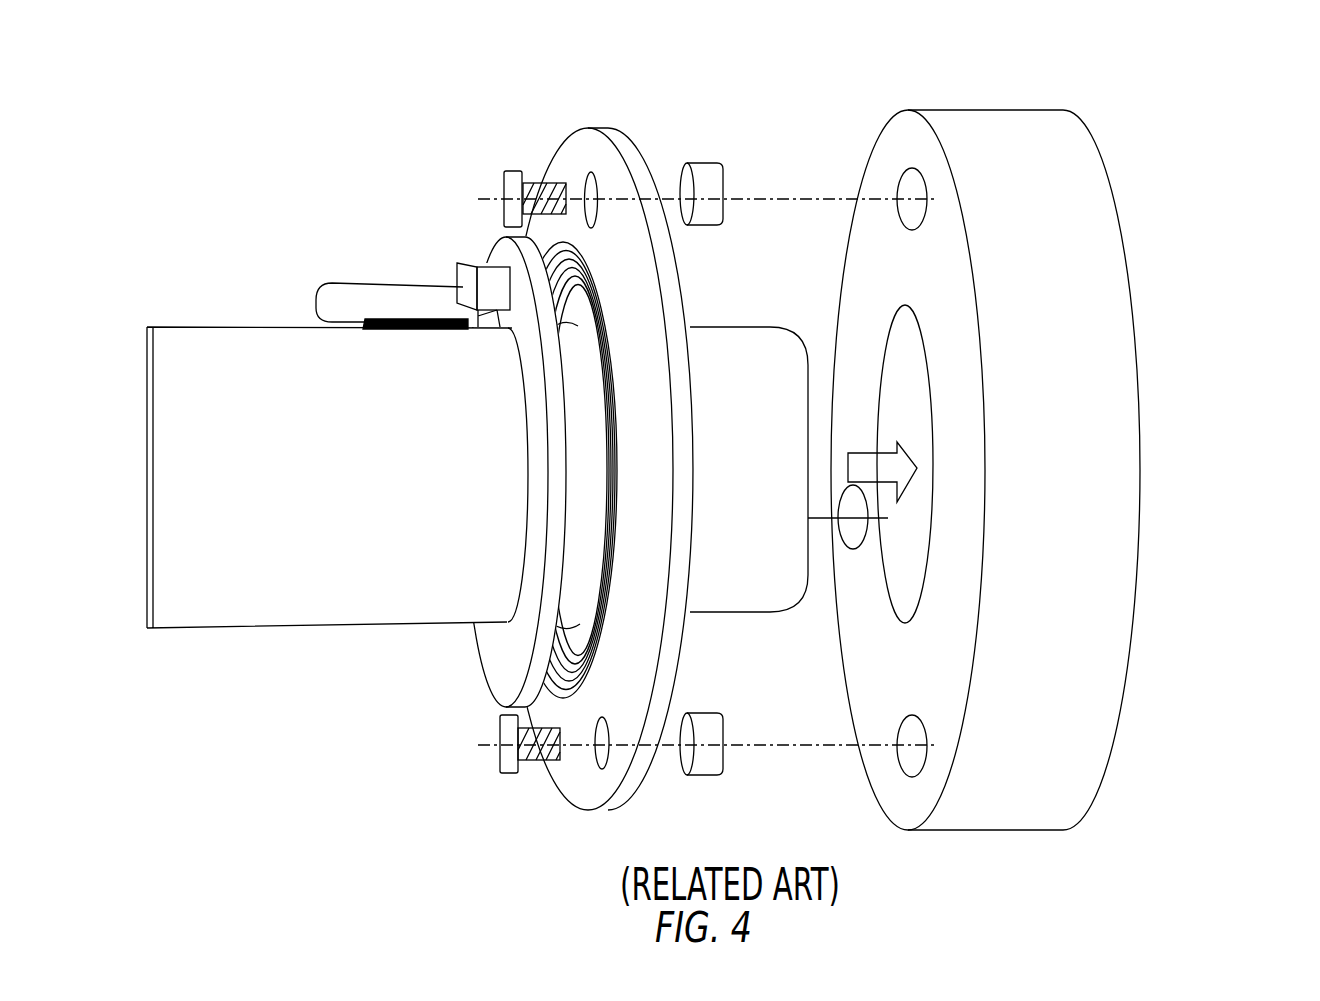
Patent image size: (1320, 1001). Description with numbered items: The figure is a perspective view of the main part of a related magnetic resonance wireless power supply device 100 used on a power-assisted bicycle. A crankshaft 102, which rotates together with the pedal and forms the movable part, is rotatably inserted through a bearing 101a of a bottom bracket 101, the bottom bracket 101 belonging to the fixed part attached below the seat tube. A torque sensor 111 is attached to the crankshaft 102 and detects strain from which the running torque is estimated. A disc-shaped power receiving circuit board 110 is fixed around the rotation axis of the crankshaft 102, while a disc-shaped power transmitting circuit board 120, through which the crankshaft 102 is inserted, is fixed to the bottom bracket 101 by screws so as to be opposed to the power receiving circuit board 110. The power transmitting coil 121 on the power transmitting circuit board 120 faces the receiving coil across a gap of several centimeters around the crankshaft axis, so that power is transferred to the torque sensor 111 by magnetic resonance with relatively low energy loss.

The wireless power supply device 100 is at (637, 413).
The bottom bracket 101 is at (1060, 761).
The bearing 101a is at (900, 560).
The crankshaft 102 is at (190, 353).
The power receiving circuit board 110 is at (512, 676).
The torque sensor 111 is at (476, 268).
The power transmitting circuit board 120 is at (597, 155).
The power transmitting coil 121 is at (610, 337).